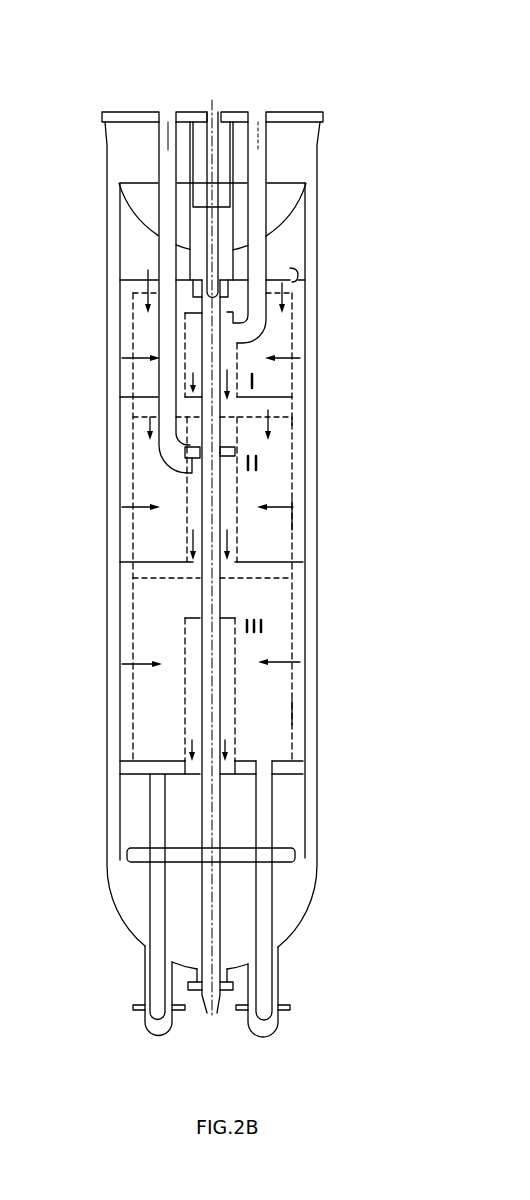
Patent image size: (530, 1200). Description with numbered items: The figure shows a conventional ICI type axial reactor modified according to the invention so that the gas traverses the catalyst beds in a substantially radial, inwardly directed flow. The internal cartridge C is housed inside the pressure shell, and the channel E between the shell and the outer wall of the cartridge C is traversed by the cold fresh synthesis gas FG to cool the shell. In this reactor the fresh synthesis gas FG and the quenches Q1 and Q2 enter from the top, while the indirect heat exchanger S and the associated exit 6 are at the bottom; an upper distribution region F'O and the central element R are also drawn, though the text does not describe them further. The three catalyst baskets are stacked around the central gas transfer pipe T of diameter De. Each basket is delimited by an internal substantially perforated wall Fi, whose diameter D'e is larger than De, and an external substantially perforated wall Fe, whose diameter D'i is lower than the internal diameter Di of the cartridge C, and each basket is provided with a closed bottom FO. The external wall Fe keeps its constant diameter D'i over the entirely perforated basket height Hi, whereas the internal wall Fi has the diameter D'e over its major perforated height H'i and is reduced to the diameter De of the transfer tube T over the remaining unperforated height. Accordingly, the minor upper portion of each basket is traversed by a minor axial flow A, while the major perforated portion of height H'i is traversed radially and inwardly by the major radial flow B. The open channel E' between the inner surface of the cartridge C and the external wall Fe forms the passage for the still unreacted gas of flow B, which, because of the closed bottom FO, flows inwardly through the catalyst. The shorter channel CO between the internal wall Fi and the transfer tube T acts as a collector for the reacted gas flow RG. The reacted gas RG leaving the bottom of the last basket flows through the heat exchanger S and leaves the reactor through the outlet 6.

The internal cartridge C is at (305, 315).
The fresh synthesis gas FG is at (212, 92).
The second quench Q2 is at (168, 92).
The first quench Q1 is at (258, 92).
The upper distribution bowl F'O is at (254, 216).
The minor axial flow A is at (298, 273).
The major radial flow B is at (128, 357).
The channel between shell and cartridge E is at (128, 527).
The open channel E' is at (299, 527).
The closed bottom FO is at (287, 398).
The reacted gas flow RG is at (190, 398).
The central riser tube R is at (207, 460).
The collector channel CO is at (193, 513).
The internal perforated wall Fi is at (237, 484).
The external perforated wall Fe is at (292, 524).
The central gas transfer pipe T is at (220, 598).
The diameter of internal wall D'e is at (286, 689).
The diameter of transfer tube De is at (220, 683).
The diameter of external wall D'i is at (286, 725).
The internal diameter of cartridge Di is at (305, 743).
The height of catalyst basket Hi is at (18, 578).
The perforated height of internal wall H'i is at (69, 694).
The indirect heat exchanger S is at (275, 882).
The reacted gas output 6 is at (212, 1028).